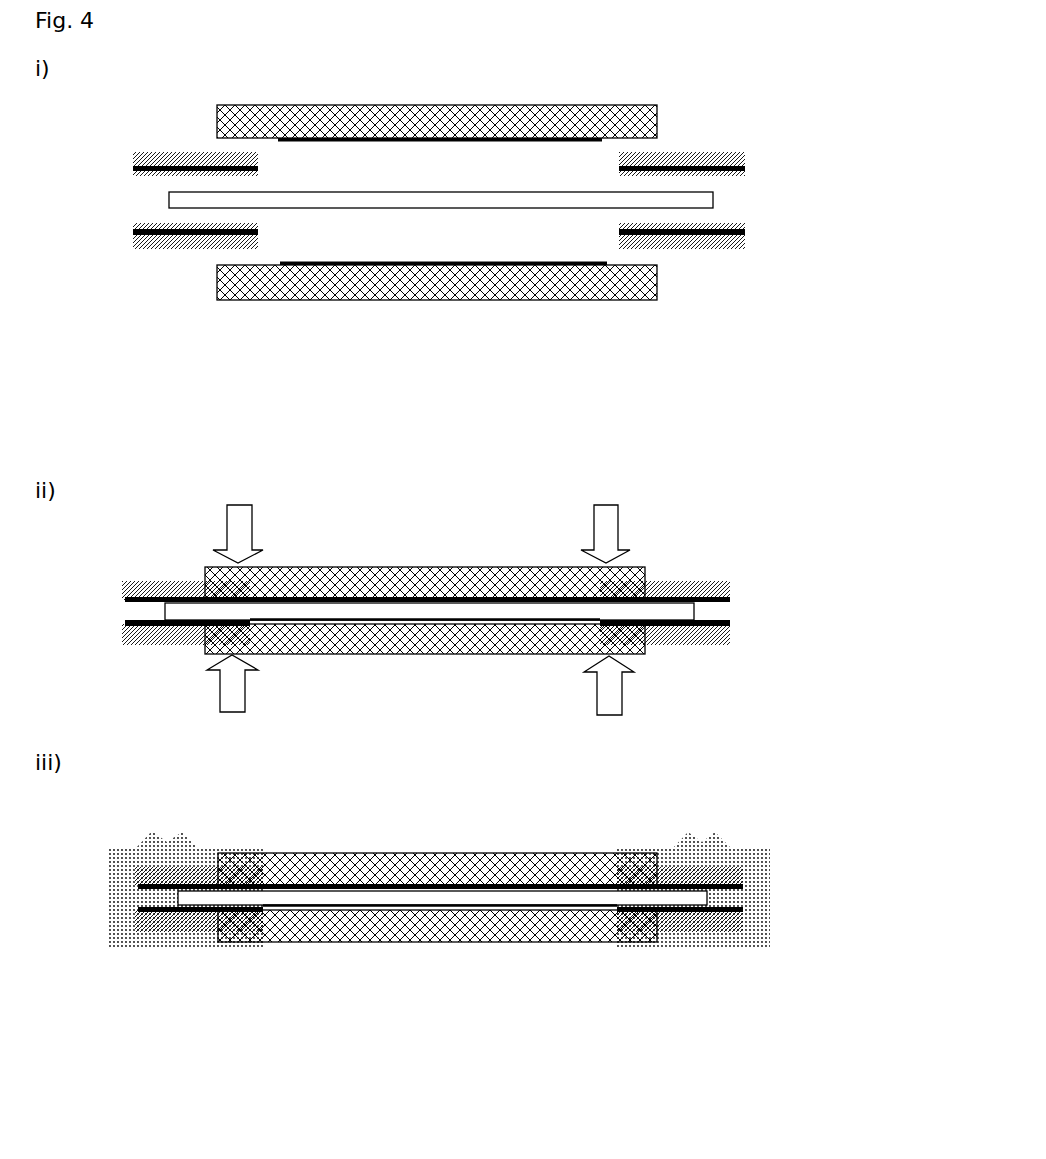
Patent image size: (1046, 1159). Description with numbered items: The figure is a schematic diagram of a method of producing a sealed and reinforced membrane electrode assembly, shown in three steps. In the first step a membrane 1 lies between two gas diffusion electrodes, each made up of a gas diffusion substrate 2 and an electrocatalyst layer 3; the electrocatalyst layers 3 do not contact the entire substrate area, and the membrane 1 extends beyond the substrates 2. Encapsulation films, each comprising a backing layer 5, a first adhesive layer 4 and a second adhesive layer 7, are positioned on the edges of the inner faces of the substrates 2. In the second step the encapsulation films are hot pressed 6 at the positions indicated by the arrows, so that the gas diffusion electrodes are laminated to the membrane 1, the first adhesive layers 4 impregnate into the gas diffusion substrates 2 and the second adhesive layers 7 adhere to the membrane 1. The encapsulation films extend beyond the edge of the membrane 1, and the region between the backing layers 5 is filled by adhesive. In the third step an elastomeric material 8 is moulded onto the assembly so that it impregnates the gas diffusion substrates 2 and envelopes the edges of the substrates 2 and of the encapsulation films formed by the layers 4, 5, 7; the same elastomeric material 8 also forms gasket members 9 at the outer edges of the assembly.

The membrane 1 is at (340, 205).
The gas diffusion substrate 2 is at (467, 113).
The electrocatalyst layer 3 is at (577, 143).
The first adhesive layer 4 is at (228, 162).
The backing layer 5 is at (146, 160).
The hot pressing 6 is at (425, 612).
The second adhesive layer 7 is at (127, 175).
The elastomeric material 8 is at (123, 937).
The gasket member 9 is at (173, 836).